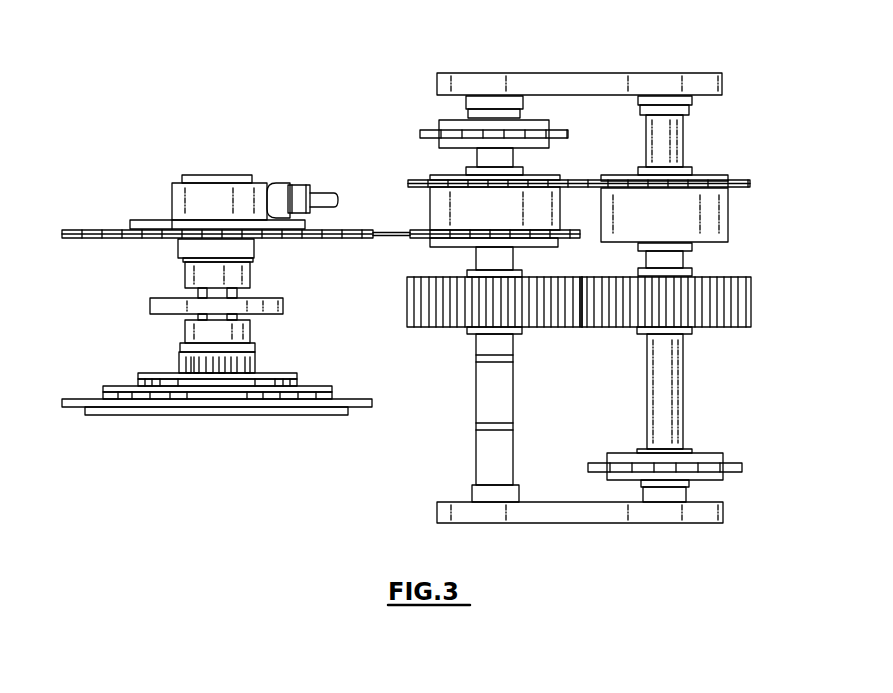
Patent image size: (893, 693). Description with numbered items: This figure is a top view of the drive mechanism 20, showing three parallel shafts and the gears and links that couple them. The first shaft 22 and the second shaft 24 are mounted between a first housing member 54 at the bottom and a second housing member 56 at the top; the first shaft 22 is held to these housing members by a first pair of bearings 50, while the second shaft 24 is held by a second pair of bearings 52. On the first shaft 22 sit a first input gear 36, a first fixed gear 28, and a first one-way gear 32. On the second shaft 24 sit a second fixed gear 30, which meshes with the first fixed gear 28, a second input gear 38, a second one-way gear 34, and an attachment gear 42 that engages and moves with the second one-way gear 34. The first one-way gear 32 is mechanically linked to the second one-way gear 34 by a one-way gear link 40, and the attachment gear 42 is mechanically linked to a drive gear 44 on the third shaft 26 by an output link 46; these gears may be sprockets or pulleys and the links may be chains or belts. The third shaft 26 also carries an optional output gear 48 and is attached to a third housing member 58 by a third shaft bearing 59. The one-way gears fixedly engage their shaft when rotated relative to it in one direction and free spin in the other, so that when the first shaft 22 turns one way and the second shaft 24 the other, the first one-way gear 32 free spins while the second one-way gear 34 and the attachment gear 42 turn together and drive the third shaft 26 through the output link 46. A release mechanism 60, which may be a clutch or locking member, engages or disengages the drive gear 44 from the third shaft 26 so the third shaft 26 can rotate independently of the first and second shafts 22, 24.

The drive mechanism 20 is at (115, 112).
The first shaft 22 is at (683, 408).
The second shaft 24 is at (515, 402).
The third shaft 26 is at (197, 318).
The first fixed gear 28 is at (752, 302).
The second fixed gear 30 is at (407, 305).
The first one-way gear 32 is at (729, 221).
The second one-way gear 34 is at (430, 204).
The first input gear 36 is at (742, 467).
The second input gear 38 is at (420, 134).
The one-way gear link 40 is at (580, 180).
The attachment gear 42 is at (430, 246).
The drive gear 44 is at (160, 222).
The output link 46 is at (388, 238).
The output gear 48 is at (130, 415).
The first pair of bearings 50 is at (693, 102).
The second pair of bearings 52 is at (466, 111).
The first housing member 54 is at (578, 523).
The second housing member 56 is at (533, 73).
The third housing member 58 is at (150, 304).
The third shaft bearing 59 is at (233, 308).
The release mechanism 60 is at (290, 183).